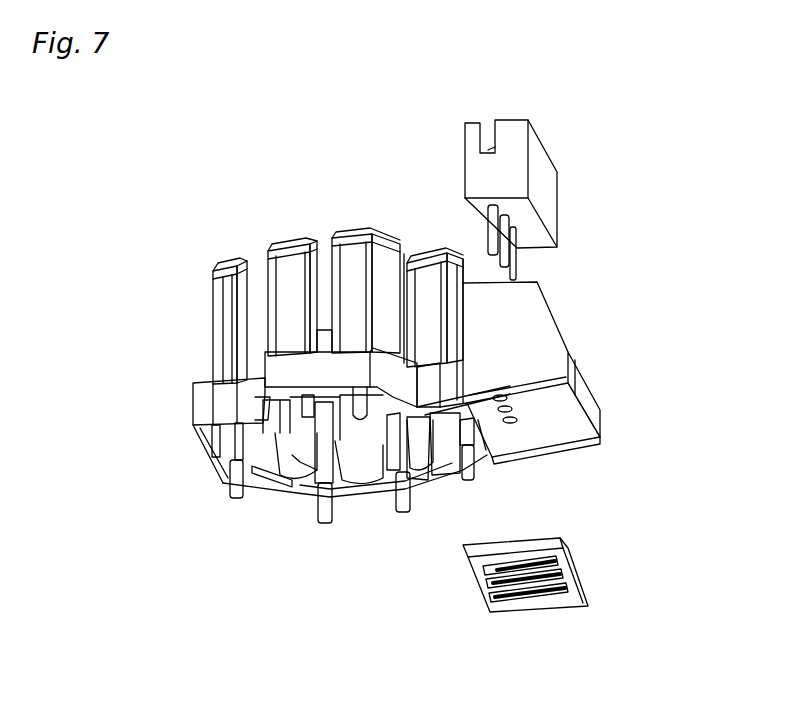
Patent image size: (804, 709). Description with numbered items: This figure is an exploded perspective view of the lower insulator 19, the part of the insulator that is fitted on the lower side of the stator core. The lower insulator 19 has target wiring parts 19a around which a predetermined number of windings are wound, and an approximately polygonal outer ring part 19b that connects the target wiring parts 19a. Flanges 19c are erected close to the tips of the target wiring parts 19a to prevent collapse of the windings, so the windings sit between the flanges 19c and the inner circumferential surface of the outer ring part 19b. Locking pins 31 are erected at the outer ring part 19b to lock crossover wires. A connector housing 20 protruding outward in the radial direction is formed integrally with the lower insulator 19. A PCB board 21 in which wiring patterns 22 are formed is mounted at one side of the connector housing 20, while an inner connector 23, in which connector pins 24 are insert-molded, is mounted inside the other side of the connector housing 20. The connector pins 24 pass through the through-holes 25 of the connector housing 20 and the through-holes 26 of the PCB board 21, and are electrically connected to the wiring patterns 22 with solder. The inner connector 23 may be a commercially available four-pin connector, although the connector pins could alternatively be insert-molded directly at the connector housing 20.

The lower insulator 19 is at (205, 318).
The target wiring parts 19a is at (263, 466).
The outer ring part 19b is at (323, 365).
The flanges 19c is at (290, 460).
The connector housing 20 is at (540, 323).
The PCB board 21 is at (583, 582).
The wiring patterns 22 is at (560, 598).
The inner connector 23 is at (543, 198).
The connector pins 24 is at (493, 238).
The through-holes 25 is at (508, 424).
The through-holes 26 is at (508, 597).
The locking pins 31 is at (325, 522).